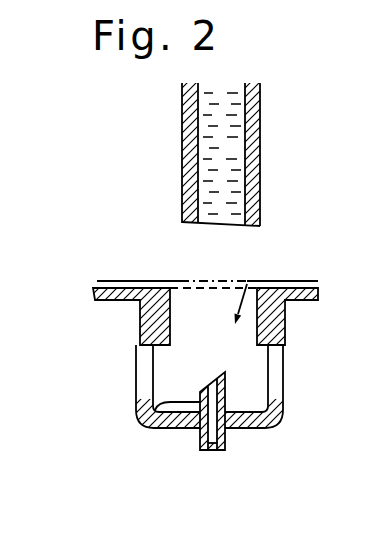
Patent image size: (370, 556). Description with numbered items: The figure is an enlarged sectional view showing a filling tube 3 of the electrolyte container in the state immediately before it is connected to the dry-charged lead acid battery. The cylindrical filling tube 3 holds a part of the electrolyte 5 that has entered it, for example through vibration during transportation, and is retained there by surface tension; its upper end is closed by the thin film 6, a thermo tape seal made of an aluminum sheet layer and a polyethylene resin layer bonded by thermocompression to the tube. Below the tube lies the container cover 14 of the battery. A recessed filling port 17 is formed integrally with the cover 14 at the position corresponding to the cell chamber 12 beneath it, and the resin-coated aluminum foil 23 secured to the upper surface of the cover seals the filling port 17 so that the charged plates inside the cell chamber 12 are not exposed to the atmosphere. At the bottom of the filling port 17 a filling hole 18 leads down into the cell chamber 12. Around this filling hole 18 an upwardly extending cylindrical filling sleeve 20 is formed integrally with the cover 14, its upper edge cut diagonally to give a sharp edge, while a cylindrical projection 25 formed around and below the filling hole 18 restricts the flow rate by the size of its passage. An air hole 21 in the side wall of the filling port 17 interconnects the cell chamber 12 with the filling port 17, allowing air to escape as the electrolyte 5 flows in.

The filling tube 3 is at (222, 170).
The electrolyte 5 is at (227, 152).
The thin film 6 is at (225, 227).
The container cover 14 is at (185, 279).
The aluminum foil 23 is at (180, 282).
The filling port 17 is at (247, 283).
The air hole 21 is at (147, 373).
The filling sleeve 20 is at (157, 427).
The filling hole 18 is at (233, 443).
The cylindrical projection 25 is at (223, 442).
The cell chamber 12 is at (203, 446).